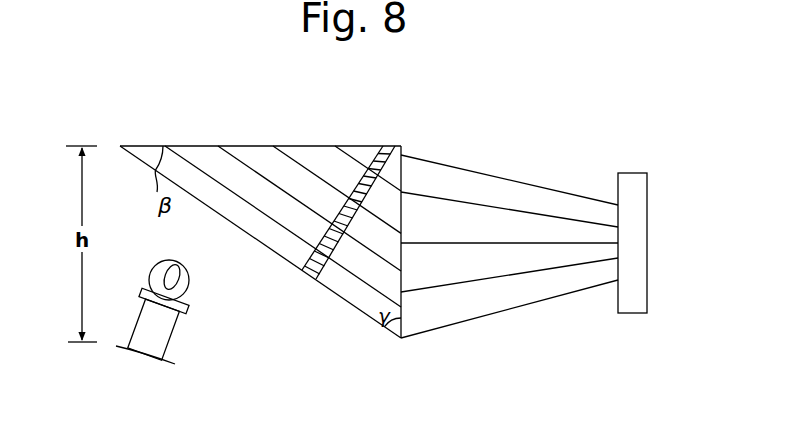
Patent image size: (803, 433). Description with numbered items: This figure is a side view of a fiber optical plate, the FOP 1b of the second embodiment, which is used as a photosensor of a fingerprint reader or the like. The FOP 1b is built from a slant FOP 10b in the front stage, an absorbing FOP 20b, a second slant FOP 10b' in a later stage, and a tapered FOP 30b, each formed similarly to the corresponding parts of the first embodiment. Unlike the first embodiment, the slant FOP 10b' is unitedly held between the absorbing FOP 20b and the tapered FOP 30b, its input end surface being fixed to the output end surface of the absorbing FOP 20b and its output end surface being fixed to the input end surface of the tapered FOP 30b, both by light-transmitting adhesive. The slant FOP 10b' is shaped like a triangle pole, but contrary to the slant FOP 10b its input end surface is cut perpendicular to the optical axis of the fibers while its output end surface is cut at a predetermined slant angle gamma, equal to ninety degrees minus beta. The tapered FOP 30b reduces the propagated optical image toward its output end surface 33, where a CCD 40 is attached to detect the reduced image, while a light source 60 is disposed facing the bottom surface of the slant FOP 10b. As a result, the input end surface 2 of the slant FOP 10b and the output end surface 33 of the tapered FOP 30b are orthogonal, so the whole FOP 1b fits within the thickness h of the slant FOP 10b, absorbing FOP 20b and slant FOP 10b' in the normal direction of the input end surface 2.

The FOP 1b is at (560, 123).
The input end surface 2 is at (205, 145).
The slant FOP 10b is at (283, 196).
The slant FOP 10b' is at (260, 268).
The absorbing FOP 20b is at (397, 142).
The tapered FOP 30b is at (530, 298).
The output end surface 33 is at (617, 212).
The CCD 40 is at (638, 183).
The light source 60 is at (197, 307).